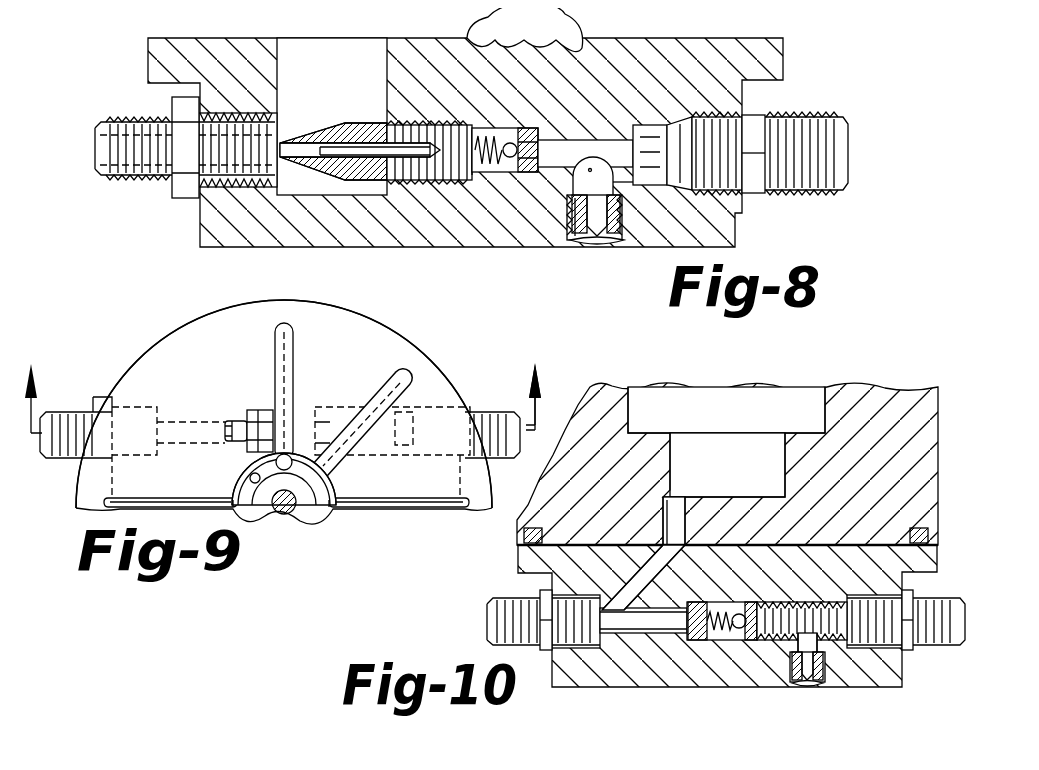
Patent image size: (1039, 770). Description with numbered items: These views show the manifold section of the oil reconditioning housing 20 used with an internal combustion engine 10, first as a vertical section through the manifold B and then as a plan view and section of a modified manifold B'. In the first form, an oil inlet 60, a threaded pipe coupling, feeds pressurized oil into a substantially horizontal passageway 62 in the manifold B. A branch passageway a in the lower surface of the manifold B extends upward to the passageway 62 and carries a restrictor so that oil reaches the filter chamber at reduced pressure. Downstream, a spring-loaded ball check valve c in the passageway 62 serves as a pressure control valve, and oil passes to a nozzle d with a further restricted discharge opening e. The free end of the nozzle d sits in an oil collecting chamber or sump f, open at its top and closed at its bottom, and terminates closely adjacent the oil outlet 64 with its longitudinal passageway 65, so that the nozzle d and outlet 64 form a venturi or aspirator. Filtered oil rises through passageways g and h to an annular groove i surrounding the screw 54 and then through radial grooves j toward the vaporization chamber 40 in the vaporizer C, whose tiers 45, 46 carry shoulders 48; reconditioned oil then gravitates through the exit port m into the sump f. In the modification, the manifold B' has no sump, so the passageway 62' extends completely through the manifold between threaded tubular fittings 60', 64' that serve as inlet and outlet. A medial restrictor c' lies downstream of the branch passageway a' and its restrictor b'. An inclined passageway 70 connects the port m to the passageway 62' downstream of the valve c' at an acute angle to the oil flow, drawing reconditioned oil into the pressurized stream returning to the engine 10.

In FIG. 8, the manifold B is at (423, 142).
In FIG. 9, the manifold B' is at (284, 399).
In FIG. 10, the vaporizer C is at (892, 378).
In FIG. 9, the internal combustion engine 10 is at (296, 378).
In FIG. 10, the internal combustion engine 10 is at (549, 377).
In FIG. 9, the housing 20 is at (172, 324).
In FIG. 10, the housing 20 is at (664, 372).
In FIG. 10, the vaporization chamber 40 is at (821, 405).
In FIG. 10, the intermediate tier 45 is at (641, 425).
In FIG. 10, the bottom tier 46 is at (749, 484).
In FIG. 10, the shoulder 48 is at (796, 418).
In FIG. 9, the screw 54 is at (323, 506).
In FIG. 8, the oil inlet 60 is at (795, 134).
In FIG. 9, the oil inlet fitting 60' is at (492, 408).
In FIG. 10, the oil inlet fitting 60' is at (906, 638).
In FIG. 8, the horizontal passageway 62 is at (655, 139).
In FIG. 9, the passageway 62' is at (332, 400).
In FIG. 10, the passageway 62' is at (660, 596).
In FIG. 8, the oil outlet 64 is at (159, 165).
In FIG. 9, the oil outlet fitting 64' is at (81, 402).
In FIG. 10, the oil outlet fitting 64' is at (524, 608).
In FIG. 8, the longitudinal passageway 65 is at (108, 158).
In FIG. 9, the inclined passageway 70 is at (231, 418).
In FIG. 10, the inclined passageway 70 is at (646, 583).
In FIG. 8, the branch passageway a is at (613, 200).
In FIG. 9, the branch passageway a' is at (291, 452).
In FIG. 10, the branch passageway a' is at (828, 659).
In FIG. 9, the restrictor b' is at (361, 413).
In FIG. 10, the restrictor b' is at (782, 706).
In FIG. 8, the ball check valve c is at (506, 123).
In FIG. 9, the pressure control valve c' is at (253, 405).
In FIG. 10, the pressure control valve c' is at (798, 599).
In FIG. 8, the nozzle d is at (351, 126).
In FIG. 8, the discharge opening e is at (318, 143).
In FIG. 8, the sump f is at (543, 217).
In FIG. 8, the cavity f' is at (332, 101).
In FIG. 8, the passageways g is at (525, 30).
In FIG. 9, the passageways h is at (286, 501).
In FIG. 9, the annular groove i is at (250, 478).
In FIG. 10, the annular groove i is at (846, 521).
In FIG. 9, the radial grooves j is at (285, 338).
In FIG. 10, the exit port m is at (663, 522).